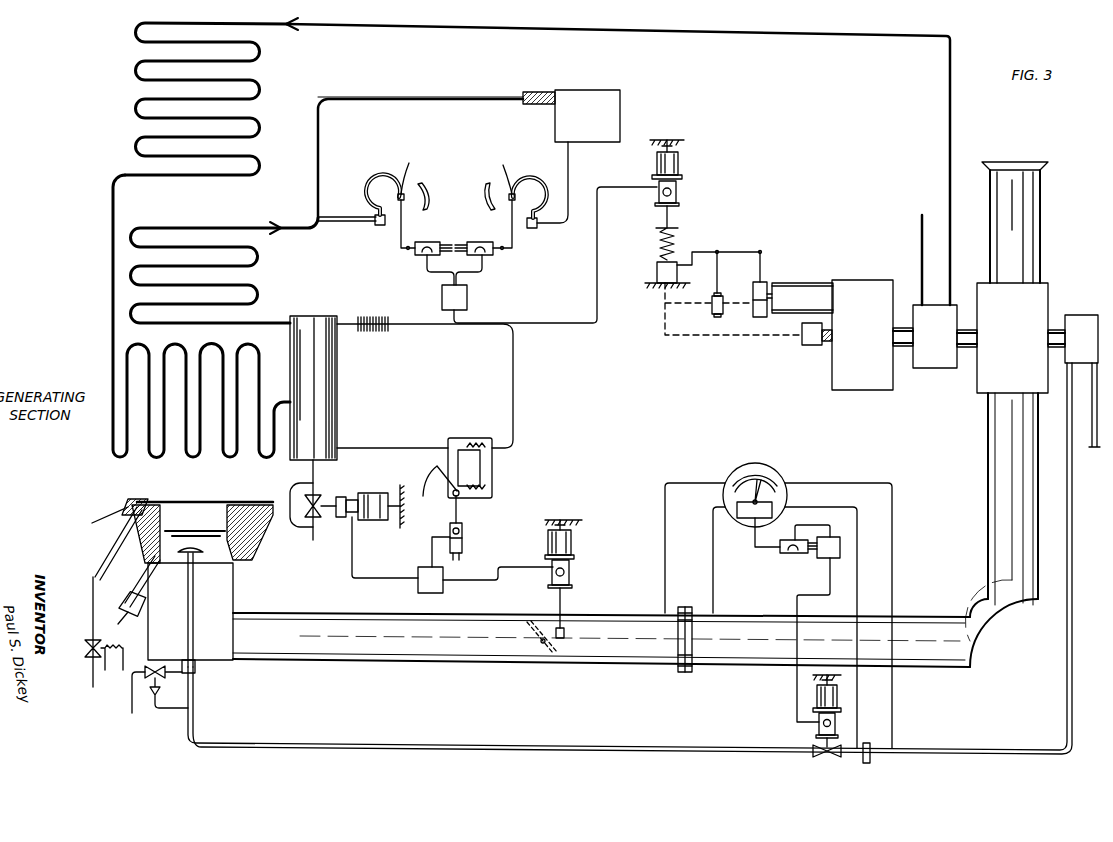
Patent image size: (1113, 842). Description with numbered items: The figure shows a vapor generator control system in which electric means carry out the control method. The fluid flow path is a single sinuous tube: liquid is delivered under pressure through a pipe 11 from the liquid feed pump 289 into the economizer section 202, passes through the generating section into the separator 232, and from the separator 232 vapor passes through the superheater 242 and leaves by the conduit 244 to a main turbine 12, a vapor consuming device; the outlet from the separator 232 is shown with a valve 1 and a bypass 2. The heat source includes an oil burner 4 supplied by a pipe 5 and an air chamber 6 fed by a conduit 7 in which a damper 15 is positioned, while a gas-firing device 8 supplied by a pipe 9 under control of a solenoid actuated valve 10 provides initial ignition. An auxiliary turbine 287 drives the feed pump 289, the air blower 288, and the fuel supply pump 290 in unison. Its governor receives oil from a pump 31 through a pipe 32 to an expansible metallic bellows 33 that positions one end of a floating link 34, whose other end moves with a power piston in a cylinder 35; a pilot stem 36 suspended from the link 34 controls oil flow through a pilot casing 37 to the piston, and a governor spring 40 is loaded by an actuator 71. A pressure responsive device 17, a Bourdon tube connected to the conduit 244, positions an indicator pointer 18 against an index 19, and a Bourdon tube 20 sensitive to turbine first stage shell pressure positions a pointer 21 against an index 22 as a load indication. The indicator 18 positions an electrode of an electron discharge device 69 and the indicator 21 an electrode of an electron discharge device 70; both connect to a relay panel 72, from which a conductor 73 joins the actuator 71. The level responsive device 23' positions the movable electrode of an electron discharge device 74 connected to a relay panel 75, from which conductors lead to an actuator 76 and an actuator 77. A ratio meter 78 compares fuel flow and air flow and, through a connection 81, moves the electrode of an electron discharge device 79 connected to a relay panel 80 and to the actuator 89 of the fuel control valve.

The valve 1 is at (313, 535).
The bypass line 2 is at (290, 495).
The oil burner 4 is at (195, 609).
The pipe 5 is at (312, 744).
The air chamber 6 is at (236, 578).
The conduit 7 is at (352, 612).
The gas-firing device 8 is at (116, 531).
The pipe 9 is at (93, 603).
The solenoid actuated valve 10 is at (85, 648).
The pipe 11 is at (795, 37).
The main turbine 12 is at (620, 92).
The damper 15 is at (532, 656).
The pressure responsive device 17 is at (387, 177).
The indicator pointer 18 is at (409, 178).
The index 19 is at (429, 188).
The Bourdon tube 20 is at (536, 185).
The indicator pointer 21 is at (509, 179).
The index 22 is at (485, 188).
The level responsive device 23' is at (474, 468).
The pump 31 is at (812, 345).
The pipe 32 is at (729, 337).
The expansible metallic bellows 33 is at (657, 275).
The floating link 34 is at (704, 253).
The cylinder 35 is at (755, 316).
The pilot stem 36 is at (720, 292).
The pilot casing 37 is at (712, 313).
The governor spring 40 is at (660, 246).
The electron discharge device 69 is at (431, 240).
The electron discharge device 70 is at (476, 242).
The actuator 71 is at (681, 170).
The relay panel 72 is at (467, 300).
The conductor 73 is at (566, 322).
The electron discharge device 74 is at (462, 540).
The relay panel 75 is at (447, 593).
The actuator 76 is at (370, 493).
The actuator 77 is at (574, 557).
The ratio meter 78 is at (770, 465).
The electron discharge device 79 is at (788, 553).
The relay panel 80 is at (848, 530).
The connection 81 is at (757, 548).
The actuator 89 is at (817, 698).
The economizer section 202 is at (148, 99).
The separator 232 is at (338, 376).
The superheater 242 is at (159, 270).
The conduit 244 is at (322, 117).
The auxiliary turbine 287 is at (840, 390).
The air blower 288 is at (978, 393).
The liquid feed pump 289 is at (920, 368).
The fuel supply pump 290 is at (1075, 315).